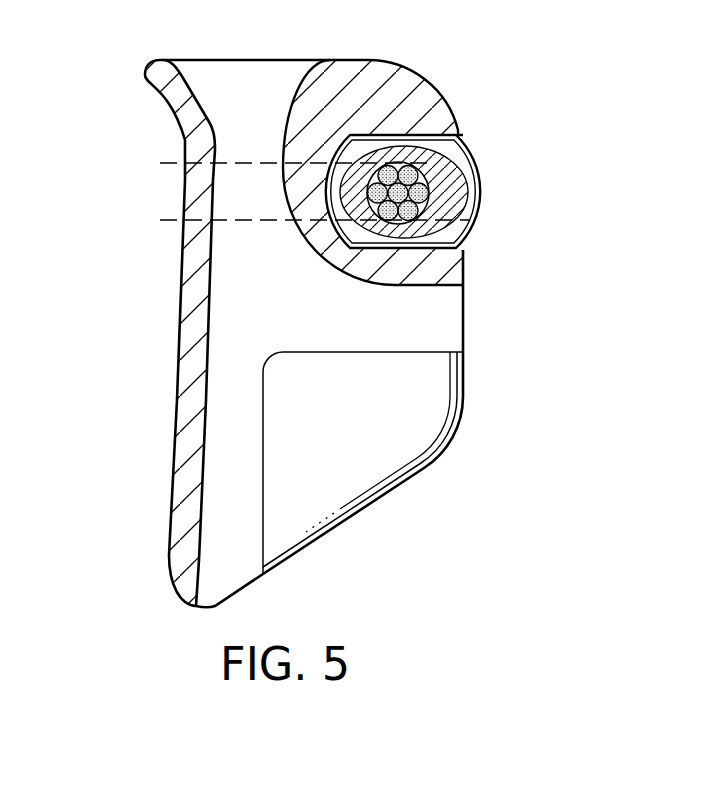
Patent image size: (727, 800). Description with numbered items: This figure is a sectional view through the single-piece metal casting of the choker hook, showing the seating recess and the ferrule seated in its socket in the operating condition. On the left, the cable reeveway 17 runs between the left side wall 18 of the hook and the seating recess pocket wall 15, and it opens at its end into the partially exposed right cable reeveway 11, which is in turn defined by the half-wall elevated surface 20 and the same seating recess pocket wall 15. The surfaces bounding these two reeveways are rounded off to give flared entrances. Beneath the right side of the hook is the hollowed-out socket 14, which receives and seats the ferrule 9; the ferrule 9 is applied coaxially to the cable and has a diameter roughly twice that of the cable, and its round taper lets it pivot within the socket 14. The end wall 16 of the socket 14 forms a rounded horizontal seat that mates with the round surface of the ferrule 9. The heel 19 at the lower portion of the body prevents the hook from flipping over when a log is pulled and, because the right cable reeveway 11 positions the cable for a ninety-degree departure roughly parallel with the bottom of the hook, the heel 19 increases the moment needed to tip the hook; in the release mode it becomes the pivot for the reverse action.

The ferrule 9 is at (430, 164).
The right cable reeveway 11 is at (440, 325).
The socket 14 is at (498, 206).
The seating recess pocket wall 15 is at (370, 80).
The end wall 16 is at (328, 185).
The cable reeveway 17 is at (248, 95).
The left side wall 18 is at (185, 320).
The heel 19 is at (358, 517).
The half-wall elevated surface 20 is at (377, 443).